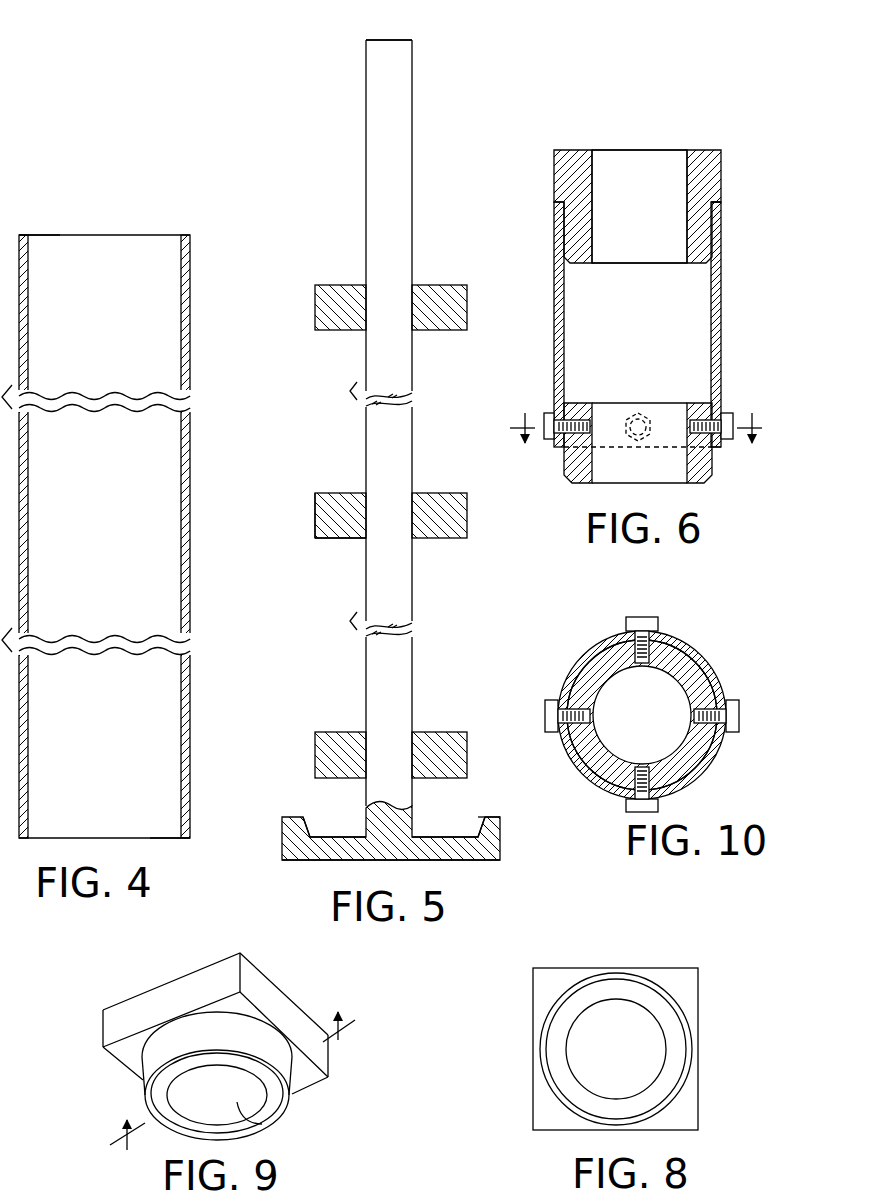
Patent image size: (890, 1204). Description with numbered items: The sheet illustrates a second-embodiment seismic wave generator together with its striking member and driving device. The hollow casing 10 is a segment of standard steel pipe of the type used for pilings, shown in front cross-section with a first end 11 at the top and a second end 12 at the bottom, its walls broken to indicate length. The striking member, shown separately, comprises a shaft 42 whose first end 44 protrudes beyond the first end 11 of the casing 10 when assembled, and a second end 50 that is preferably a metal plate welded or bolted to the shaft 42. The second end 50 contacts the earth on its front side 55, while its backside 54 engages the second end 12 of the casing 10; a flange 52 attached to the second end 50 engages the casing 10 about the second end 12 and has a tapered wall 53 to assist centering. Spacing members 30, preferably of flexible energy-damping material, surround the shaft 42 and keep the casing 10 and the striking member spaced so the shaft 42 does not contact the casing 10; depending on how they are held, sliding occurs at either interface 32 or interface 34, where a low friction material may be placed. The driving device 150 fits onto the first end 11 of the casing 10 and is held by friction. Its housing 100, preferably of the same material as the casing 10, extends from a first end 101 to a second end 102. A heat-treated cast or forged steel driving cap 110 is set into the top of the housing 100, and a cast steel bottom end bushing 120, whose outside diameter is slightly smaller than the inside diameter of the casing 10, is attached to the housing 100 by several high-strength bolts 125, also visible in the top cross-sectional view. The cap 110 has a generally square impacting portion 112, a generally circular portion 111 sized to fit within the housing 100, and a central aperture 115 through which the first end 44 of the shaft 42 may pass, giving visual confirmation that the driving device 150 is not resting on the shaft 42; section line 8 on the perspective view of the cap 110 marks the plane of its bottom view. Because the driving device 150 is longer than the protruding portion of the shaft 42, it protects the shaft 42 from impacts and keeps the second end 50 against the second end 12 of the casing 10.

In FIG. 4, the hollow casing 10 is at (190, 325).
In FIG. 6, the hollow casing 10 is at (636, 418).
In FIG. 4, the first end of casing 11 is at (23, 235).
In FIG. 4, the second end of casing 12 is at (190, 838).
In FIG. 5, the spacing member 30 is at (330, 290).
In FIG. 5, the interface 32 is at (315, 520).
In FIG. 5, the interface 34 is at (366, 538).
In FIG. 5, the shaft 42 is at (380, 160).
In FIG. 5, the first end of striking member 44 is at (375, 40).
In FIG. 5, the second end of striking member 50 is at (280, 794).
In FIG. 5, the flange 52 is at (480, 817).
In FIG. 5, the tapered wall 53 is at (310, 830).
In FIG. 5, the backside of second end 54 is at (445, 832).
In FIG. 5, the front side of second end 55 is at (480, 860).
In FIG. 6, the driving device housing 100 is at (721, 308).
In FIG. 10, the driving device housing 100 is at (710, 672).
In FIG. 6, the first end of tube 101 is at (721, 202).
In FIG. 6, the second end of housing 102 is at (721, 450).
In FIG. 6, the driving cap 110 is at (550, 160).
In FIG. 9, the driving cap 110 is at (108, 986).
In FIG. 8, the driving cap 110 is at (518, 999).
In FIG. 9, the circular portion 111 is at (152, 1055).
In FIG. 8, the circular portion 111 is at (668, 1025).
In FIG. 9, the impacting portion 112 is at (125, 1018).
In FIG. 8, the impacting portion 112 is at (545, 1110).
In FIG. 6, the aperture 115 is at (650, 185).
In FIG. 9, the aperture 115 is at (245, 1106).
In FIG. 8, the aperture 115 is at (622, 1023).
In FIG. 6, the bottom end bushing 120 is at (566, 465).
In FIG. 10, the bottom end bushing 120 is at (595, 668).
In FIG. 6, the bolts 125 is at (733, 438).
In FIG. 10, the bolts 125 is at (650, 618).
In FIG. 6, the driving device 150 is at (599, 112).
In FIG. 9, the section line 8- 8 is at (237, 1097).